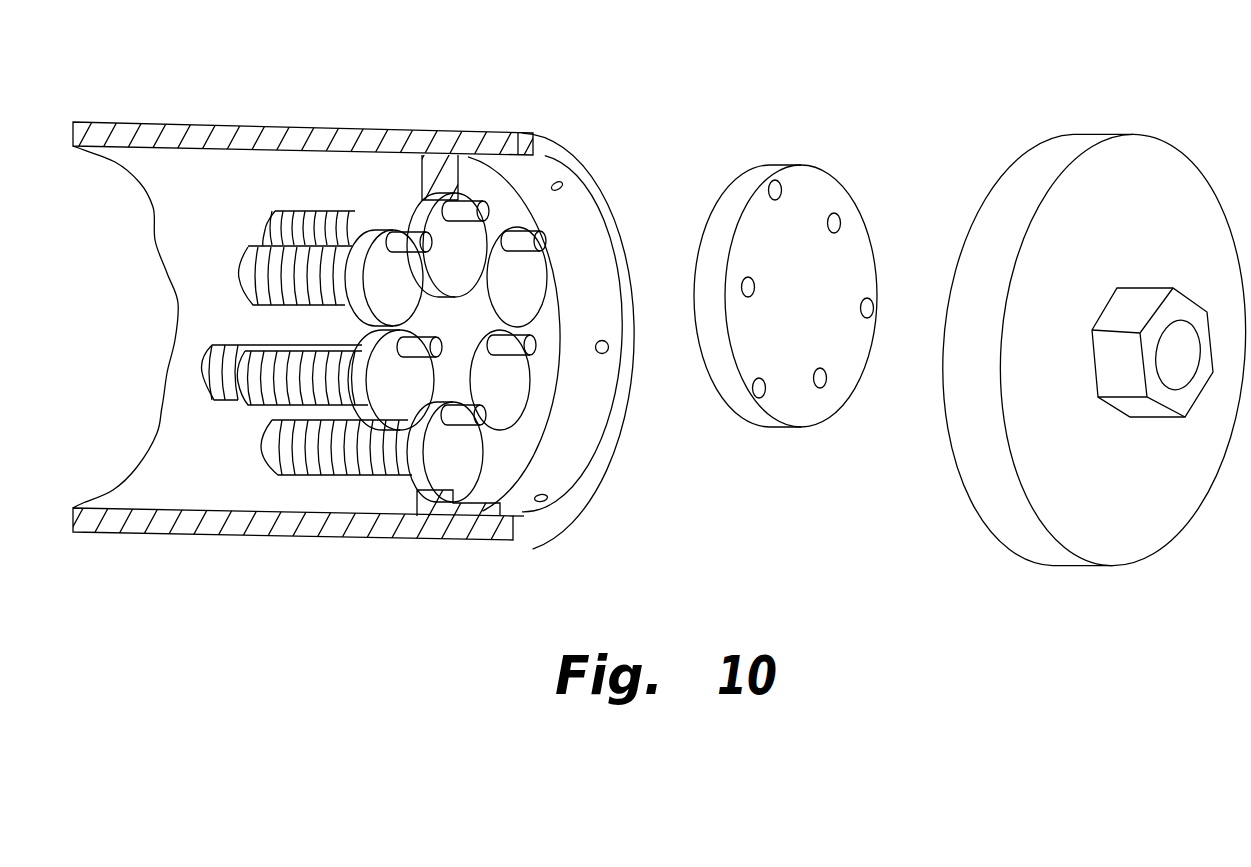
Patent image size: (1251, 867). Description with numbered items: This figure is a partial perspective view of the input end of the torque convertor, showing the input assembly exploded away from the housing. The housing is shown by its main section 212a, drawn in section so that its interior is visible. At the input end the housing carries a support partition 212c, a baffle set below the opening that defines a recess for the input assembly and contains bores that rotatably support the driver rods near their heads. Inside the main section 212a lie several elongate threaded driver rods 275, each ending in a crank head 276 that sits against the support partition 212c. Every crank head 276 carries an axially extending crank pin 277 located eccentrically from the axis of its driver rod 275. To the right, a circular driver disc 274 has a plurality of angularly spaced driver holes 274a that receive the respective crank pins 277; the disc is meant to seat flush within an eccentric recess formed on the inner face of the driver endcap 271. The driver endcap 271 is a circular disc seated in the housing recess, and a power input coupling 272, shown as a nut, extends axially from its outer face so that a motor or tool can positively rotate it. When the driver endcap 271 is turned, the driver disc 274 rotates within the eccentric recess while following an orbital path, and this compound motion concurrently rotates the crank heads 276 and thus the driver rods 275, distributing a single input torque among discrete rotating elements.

The main section 212a is at (295, 127).
The support partition 212c is at (507, 455).
The driver endcap 271 is at (1017, 524).
The power input coupling 272 is at (1193, 300).
The driver disc 274 is at (803, 405).
The hole in retaining plate 274a is at (848, 222).
The threaded driver rod 275 is at (320, 476).
The crank head 276 is at (405, 412).
The crank pin 277 is at (539, 232).